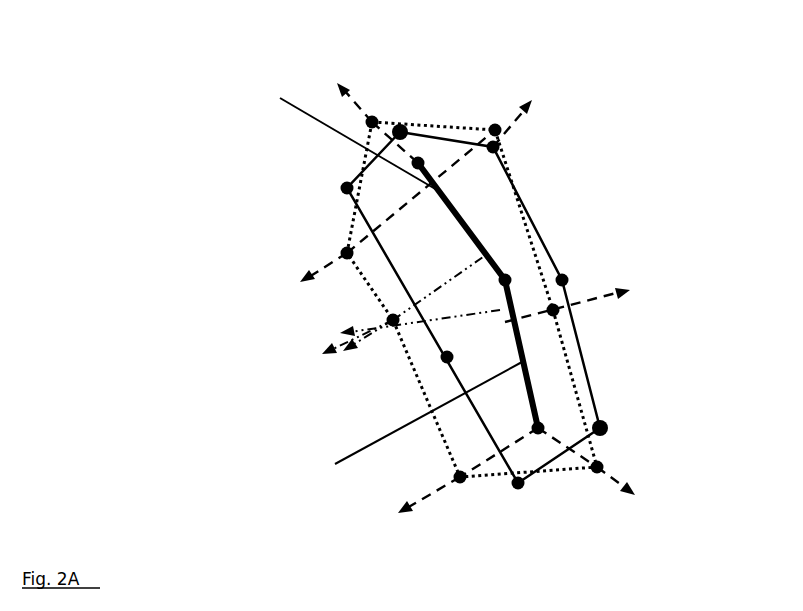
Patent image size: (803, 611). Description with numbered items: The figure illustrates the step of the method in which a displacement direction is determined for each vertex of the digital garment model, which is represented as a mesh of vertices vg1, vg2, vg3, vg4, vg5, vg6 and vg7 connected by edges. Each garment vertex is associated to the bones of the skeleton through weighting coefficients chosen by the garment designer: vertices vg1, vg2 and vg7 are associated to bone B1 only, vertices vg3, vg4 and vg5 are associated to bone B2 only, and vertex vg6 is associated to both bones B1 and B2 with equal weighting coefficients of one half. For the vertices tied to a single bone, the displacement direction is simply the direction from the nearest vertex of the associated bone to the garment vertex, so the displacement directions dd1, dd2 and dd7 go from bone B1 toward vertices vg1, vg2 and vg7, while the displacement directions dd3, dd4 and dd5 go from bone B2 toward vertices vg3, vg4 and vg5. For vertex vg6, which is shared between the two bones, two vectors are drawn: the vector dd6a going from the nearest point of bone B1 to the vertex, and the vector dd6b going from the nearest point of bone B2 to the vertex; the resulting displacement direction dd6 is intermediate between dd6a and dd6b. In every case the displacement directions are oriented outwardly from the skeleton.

The garment vertex vg1 is at (366, 112).
The garment vertex vg2 is at (495, 128).
The garment vertex vg3 is at (568, 298).
The garment vertex vg4 is at (597, 467).
The garment vertex vg5 is at (452, 480).
The garment vertex vg6 is at (391, 324).
The garment vertex vg7 is at (343, 250).
The displacement direction dd1 is at (366, 112).
The displacement direction dd2 is at (515, 115).
The displacement direction dd3 is at (590, 297).
The displacement direction dd4 is at (638, 490).
The displacement direction dd5 is at (422, 500).
The displacement direction dd6 is at (318, 353).
The vector from bone B1 dd6a is at (351, 356).
The vector from bone B2 dd6b is at (336, 333).
The displacement direction dd7 is at (327, 263).
The bone B1 is at (346, 138).
The bone B2 is at (410, 421).